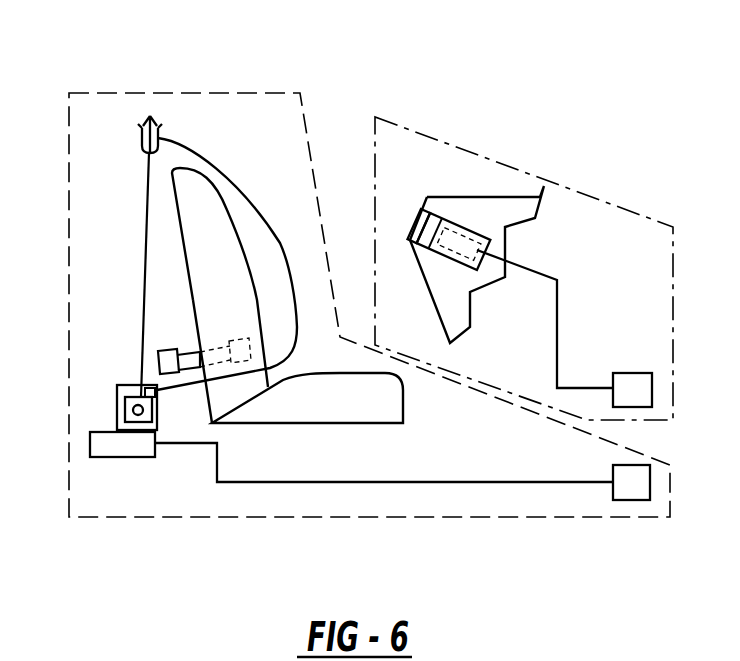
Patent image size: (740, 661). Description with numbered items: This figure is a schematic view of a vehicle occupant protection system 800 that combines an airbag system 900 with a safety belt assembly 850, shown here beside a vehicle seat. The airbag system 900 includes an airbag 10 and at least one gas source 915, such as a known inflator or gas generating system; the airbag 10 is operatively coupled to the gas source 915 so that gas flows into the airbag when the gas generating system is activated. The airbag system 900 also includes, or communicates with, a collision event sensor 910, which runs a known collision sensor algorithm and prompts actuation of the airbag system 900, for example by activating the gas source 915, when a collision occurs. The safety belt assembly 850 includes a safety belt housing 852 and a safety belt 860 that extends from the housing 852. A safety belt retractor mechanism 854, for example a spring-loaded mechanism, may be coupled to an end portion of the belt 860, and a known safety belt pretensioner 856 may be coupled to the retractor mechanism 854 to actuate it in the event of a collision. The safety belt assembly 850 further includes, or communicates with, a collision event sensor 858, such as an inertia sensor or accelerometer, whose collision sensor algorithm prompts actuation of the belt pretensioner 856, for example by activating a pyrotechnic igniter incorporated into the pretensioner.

The vehicle occupant protection system 800 is at (186, 31).
The safety belt assembly 850 is at (323, 517).
The safety belt 860 is at (194, 149).
The safety belt housing 852 is at (120, 409).
The safety belt retractor mechanism 854 is at (128, 410).
The safety belt pretensioner 856 is at (123, 445).
The collision event sensor 858 is at (630, 500).
The airbag system 900 is at (645, 213).
The airbag 10 is at (426, 226).
The gas source 915 is at (462, 237).
The collision event sensor 910 is at (633, 387).